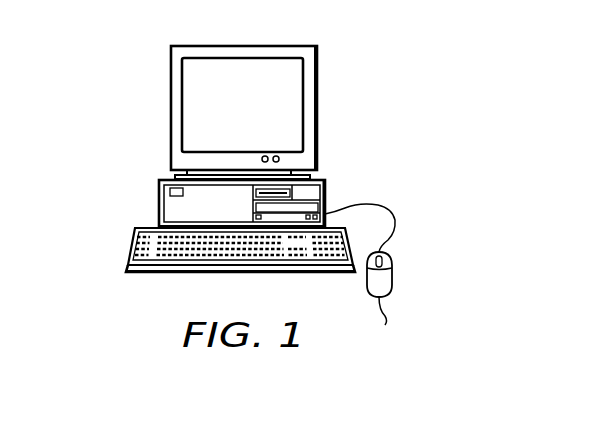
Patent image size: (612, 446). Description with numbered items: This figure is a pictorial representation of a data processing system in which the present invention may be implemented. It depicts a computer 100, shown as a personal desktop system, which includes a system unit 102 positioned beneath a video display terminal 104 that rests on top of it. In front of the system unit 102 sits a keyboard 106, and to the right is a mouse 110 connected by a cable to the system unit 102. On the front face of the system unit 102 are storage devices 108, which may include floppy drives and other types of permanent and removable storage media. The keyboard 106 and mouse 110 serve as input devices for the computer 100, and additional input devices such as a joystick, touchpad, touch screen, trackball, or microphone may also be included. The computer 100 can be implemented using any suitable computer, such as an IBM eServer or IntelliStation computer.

The computer 100 is at (112, 100).
The system unit 102 is at (159, 203).
The video display terminal 104 is at (317, 109).
The keyboard 106 is at (148, 274).
The storage devices 108 is at (333, 199).
The mouse 110 is at (363, 280).